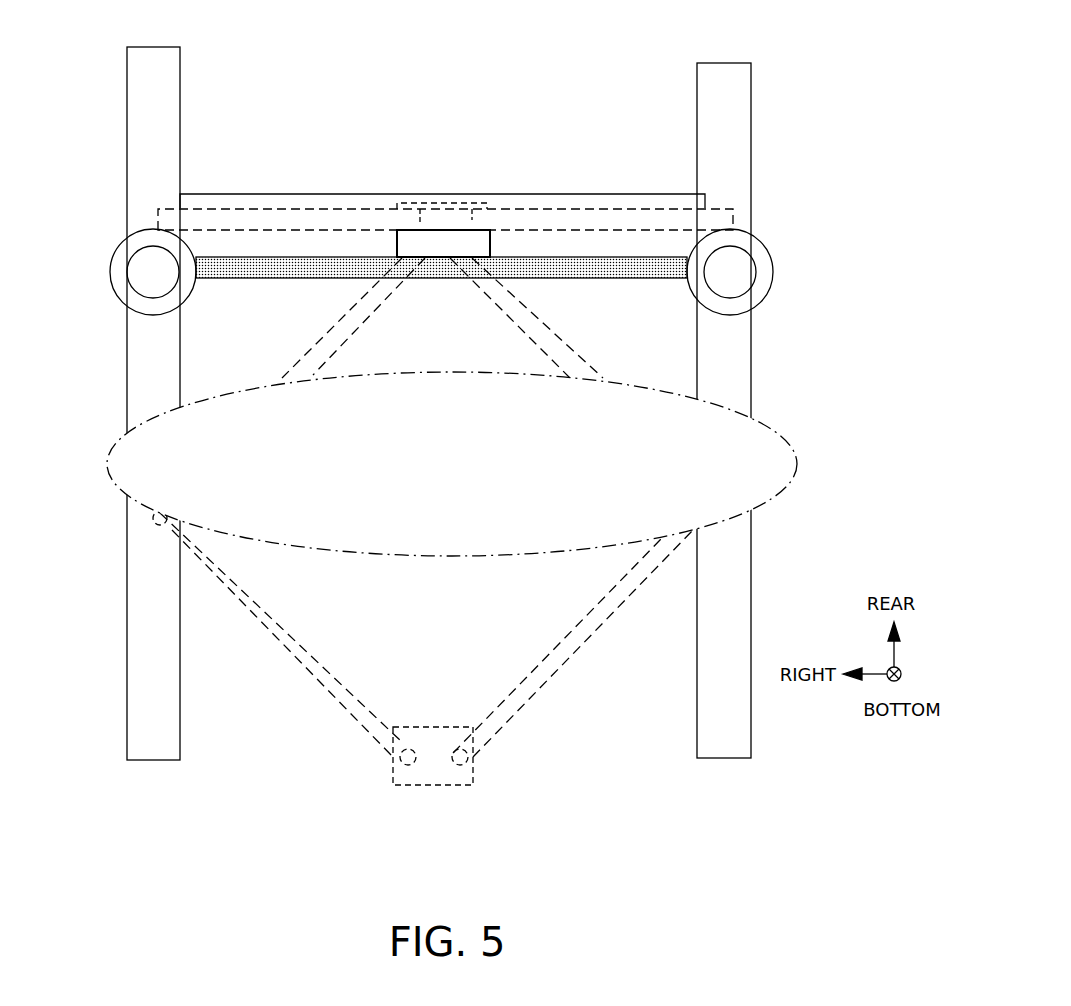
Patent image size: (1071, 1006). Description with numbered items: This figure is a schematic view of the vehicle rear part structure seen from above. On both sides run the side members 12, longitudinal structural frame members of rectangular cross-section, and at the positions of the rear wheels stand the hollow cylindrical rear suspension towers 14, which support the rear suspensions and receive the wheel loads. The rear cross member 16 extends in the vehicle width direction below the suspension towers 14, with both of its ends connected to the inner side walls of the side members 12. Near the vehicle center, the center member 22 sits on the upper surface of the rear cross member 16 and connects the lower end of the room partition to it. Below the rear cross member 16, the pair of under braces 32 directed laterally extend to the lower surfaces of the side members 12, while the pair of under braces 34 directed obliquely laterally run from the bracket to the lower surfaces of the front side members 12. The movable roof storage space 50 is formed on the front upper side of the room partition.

The side member 12 is at (163, 124).
The rear suspension tower 14 is at (150, 270).
The rear cross member 16 is at (325, 192).
The center member 22 is at (447, 250).
The under brace directed laterally 32 is at (568, 205).
The under brace directed obliquely laterally 34 is at (313, 340).
The movable roof storage space 50 is at (765, 420).